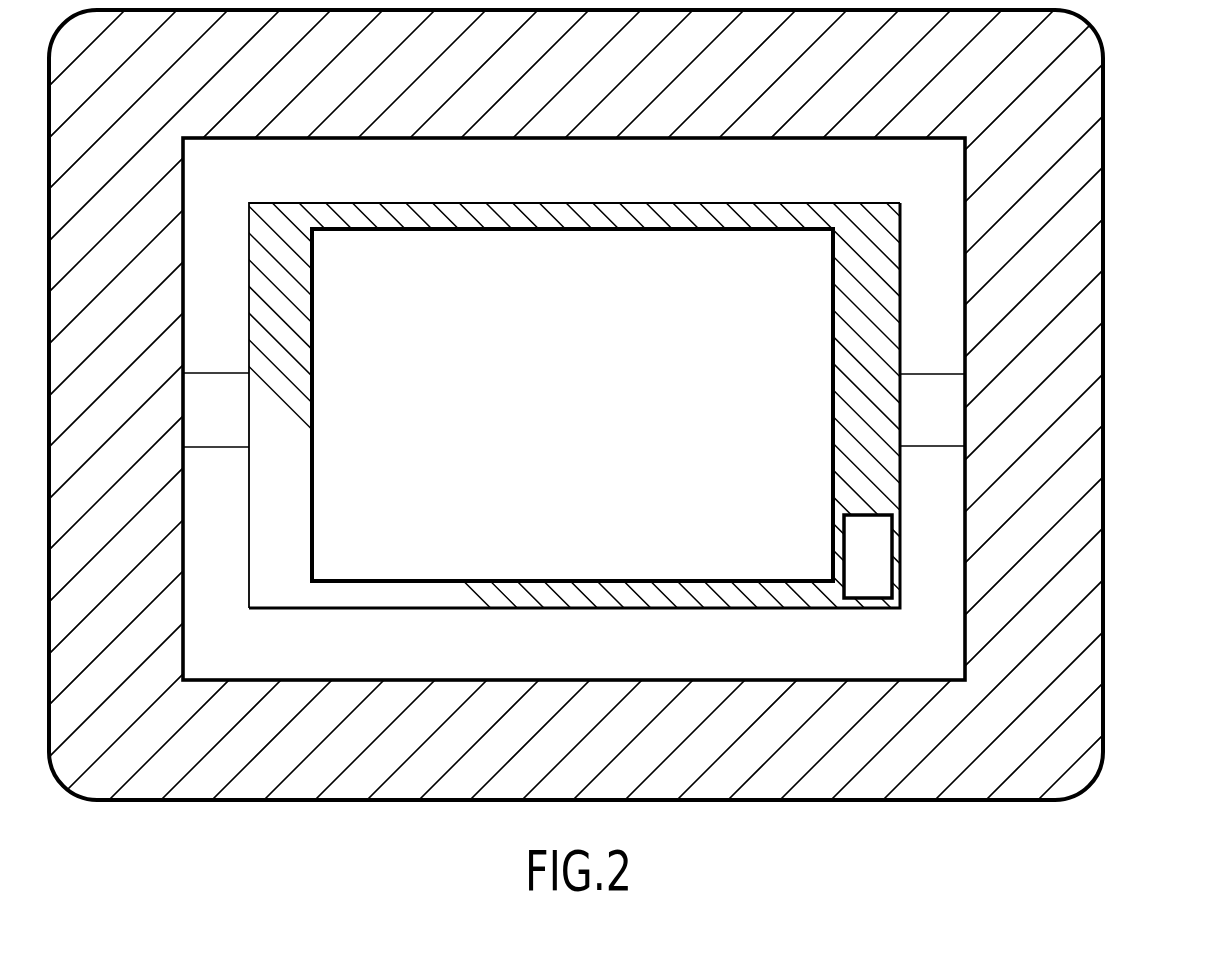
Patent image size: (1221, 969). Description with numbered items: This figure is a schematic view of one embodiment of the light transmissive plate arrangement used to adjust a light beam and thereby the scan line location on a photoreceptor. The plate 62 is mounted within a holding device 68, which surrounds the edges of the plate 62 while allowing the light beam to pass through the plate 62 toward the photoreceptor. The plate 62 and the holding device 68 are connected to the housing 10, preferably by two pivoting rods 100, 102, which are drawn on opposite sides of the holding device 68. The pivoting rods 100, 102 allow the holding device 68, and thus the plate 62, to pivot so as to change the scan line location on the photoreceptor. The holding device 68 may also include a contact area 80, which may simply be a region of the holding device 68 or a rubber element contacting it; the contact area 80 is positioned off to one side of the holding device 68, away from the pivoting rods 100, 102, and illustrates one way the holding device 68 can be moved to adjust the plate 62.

The housing 10 is at (1103, 517).
The plate 62 is at (532, 581).
The holding device 68 is at (753, 608).
The contact area 80 is at (892, 557).
The pivoting rod 100 is at (926, 446).
The pivoting rod 102 is at (215, 447).